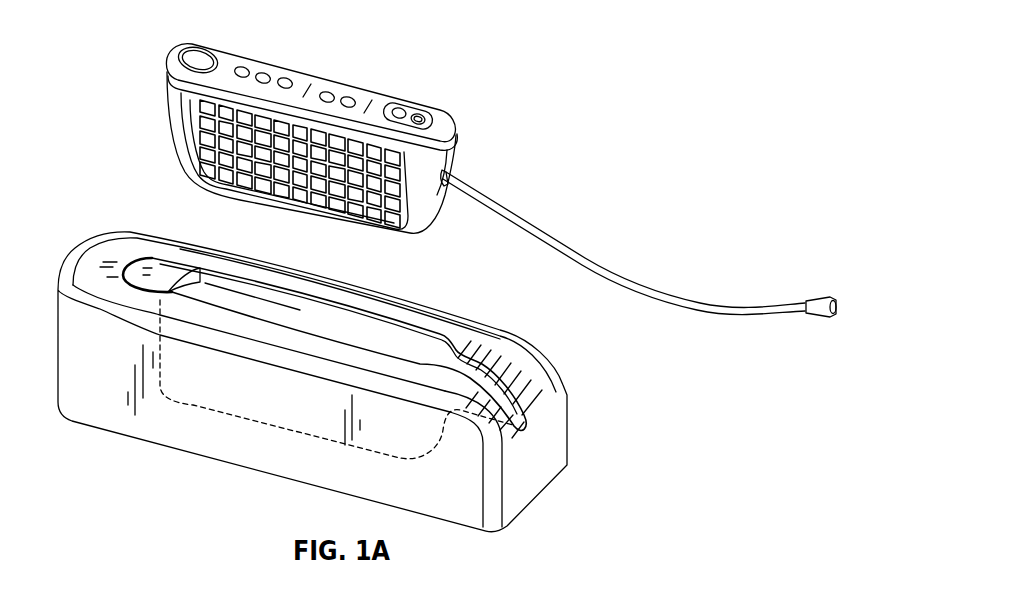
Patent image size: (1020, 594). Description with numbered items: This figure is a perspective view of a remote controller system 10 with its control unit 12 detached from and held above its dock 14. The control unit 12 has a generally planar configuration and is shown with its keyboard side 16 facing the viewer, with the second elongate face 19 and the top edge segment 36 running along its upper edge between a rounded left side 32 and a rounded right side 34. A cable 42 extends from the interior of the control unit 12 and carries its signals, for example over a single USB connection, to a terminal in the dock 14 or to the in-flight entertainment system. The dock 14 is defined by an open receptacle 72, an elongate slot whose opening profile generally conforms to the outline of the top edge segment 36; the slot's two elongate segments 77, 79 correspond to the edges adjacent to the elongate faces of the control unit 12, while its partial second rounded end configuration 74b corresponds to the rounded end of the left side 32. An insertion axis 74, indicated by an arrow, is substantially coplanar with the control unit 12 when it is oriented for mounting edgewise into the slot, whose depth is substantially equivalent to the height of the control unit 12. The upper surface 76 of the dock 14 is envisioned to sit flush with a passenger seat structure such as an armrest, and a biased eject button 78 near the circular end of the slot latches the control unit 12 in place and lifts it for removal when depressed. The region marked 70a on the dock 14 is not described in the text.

The remote controller system 10 is at (561, 80).
The control unit 12 is at (452, 145).
The dock 14 is at (430, 327).
The keyboard side 16 is at (160, 160).
The second elongate face 19 is at (231, 49).
The left side 32 is at (468, 156).
The right side 34 is at (154, 72).
The top edge segment 36 is at (323, 80).
The cable 42 is at (689, 316).
The top surface of base 70a is at (128, 260).
The open receptacle 72 is at (384, 334).
The insertion axis 74 is at (317, 306).
The partial second rounded end configuration 74b is at (457, 340).
The upper surface 76 is at (464, 398).
The elongate segment 77 is at (225, 315).
The eject button 78 is at (150, 262).
The elongate segment 79 is at (240, 293).